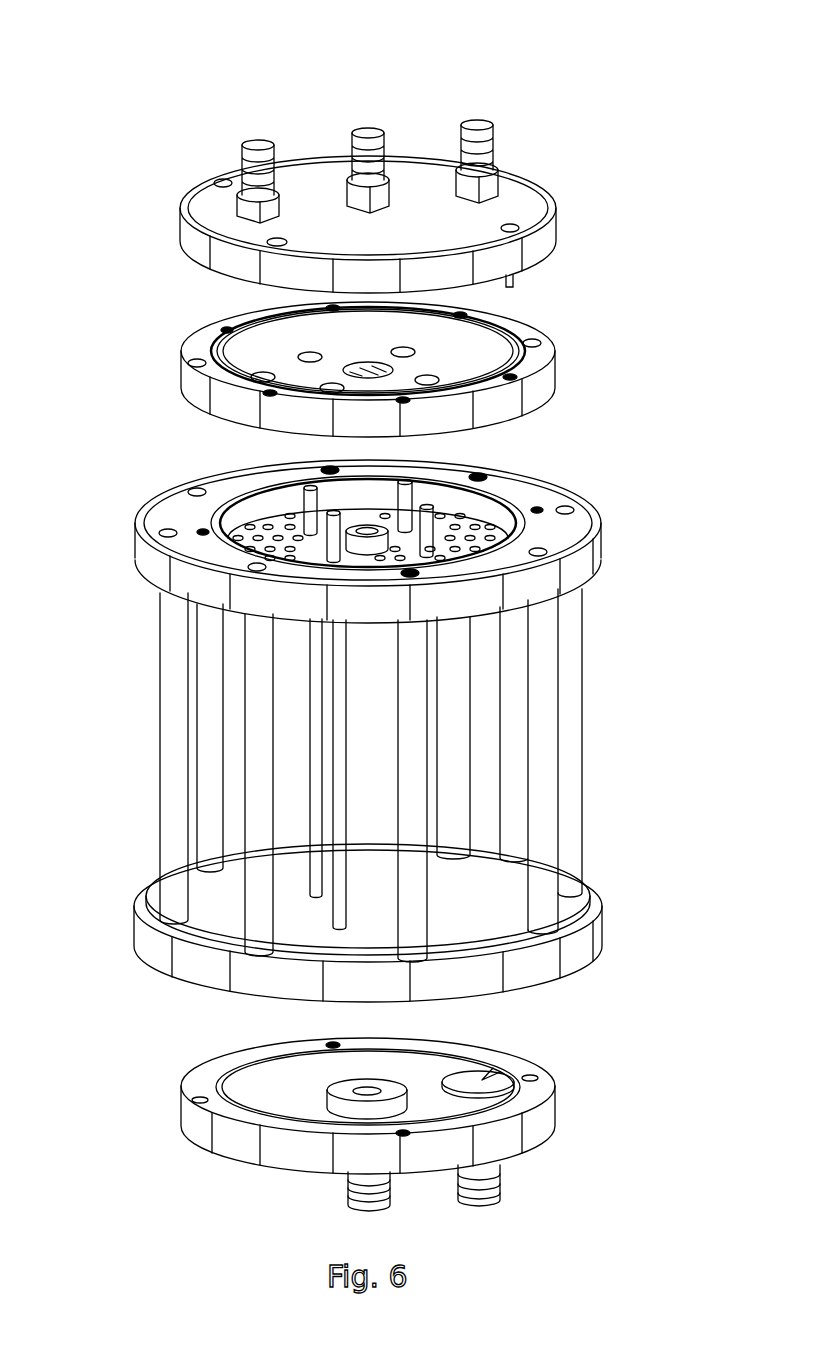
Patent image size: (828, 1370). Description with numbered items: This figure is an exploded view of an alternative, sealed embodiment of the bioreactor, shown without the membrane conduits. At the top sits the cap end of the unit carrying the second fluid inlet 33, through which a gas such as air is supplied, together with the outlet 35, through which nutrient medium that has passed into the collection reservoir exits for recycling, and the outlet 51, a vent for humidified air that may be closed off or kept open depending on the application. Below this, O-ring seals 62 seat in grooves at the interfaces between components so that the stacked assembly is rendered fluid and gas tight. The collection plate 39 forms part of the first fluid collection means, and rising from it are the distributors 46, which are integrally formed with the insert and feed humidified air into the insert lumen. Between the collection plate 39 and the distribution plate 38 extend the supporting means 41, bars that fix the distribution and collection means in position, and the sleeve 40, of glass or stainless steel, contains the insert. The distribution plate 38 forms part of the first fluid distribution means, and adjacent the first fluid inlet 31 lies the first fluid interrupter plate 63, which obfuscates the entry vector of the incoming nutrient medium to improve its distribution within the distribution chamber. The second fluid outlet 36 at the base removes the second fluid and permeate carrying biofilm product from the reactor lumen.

The second fluid inlet 33 is at (262, 140).
The outlet 51 is at (370, 128).
The outlet 35 is at (480, 120).
The O-ring seals 62 is at (553, 362).
The distributors 46 is at (447, 510).
The collection plate 39 is at (497, 520).
The supporting means 41 is at (167, 650).
The sleeve 40 is at (233, 757).
The distribution plate 38 is at (497, 925).
The first fluid interrupter plate 63 is at (487, 1078).
The first fluid inlet 31 is at (500, 1182).
The second fluid outlet 36 is at (390, 1202).